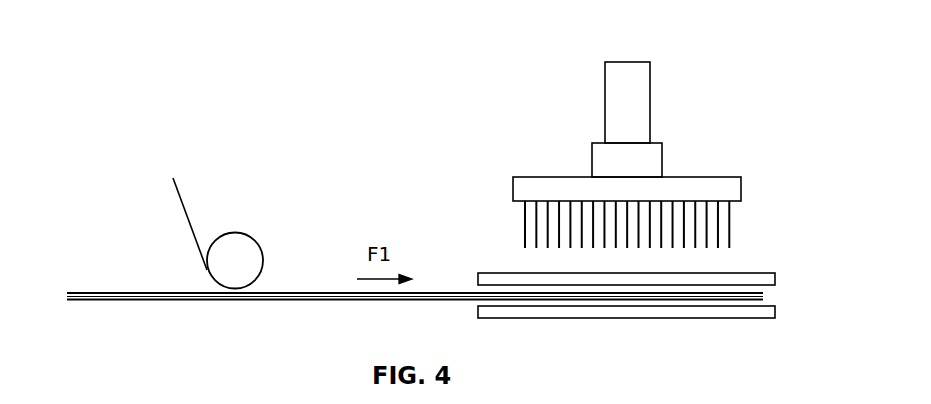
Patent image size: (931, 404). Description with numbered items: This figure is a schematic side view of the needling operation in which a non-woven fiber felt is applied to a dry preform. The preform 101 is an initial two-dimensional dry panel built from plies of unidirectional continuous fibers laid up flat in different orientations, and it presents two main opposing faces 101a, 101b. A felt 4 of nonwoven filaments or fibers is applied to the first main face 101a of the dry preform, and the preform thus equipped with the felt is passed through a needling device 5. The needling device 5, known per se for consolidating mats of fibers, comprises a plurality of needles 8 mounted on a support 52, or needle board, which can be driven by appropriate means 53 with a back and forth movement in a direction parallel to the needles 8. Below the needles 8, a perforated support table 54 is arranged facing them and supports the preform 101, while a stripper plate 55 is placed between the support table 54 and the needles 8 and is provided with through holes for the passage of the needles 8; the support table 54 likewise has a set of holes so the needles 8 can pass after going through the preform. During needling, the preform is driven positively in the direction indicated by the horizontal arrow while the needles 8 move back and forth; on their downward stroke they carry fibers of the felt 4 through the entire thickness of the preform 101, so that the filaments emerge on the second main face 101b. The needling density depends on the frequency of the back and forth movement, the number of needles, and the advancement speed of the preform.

The felt 4 is at (183, 202).
The needling device 5 is at (715, 177).
The needles 8 is at (731, 238).
The support 52 is at (741, 192).
The means 53 is at (627, 67).
The perforated support table 54 is at (763, 318).
The stripper plate 55 is at (777, 278).
The preform 101 is at (411, 298).
The first main face 101a is at (147, 292).
The second main face 101b is at (170, 301).